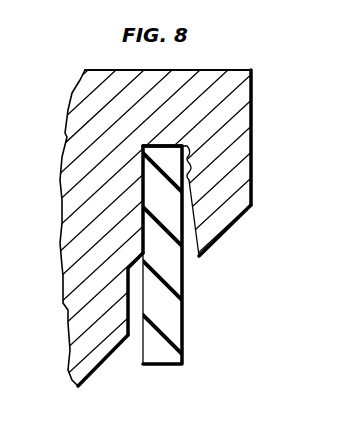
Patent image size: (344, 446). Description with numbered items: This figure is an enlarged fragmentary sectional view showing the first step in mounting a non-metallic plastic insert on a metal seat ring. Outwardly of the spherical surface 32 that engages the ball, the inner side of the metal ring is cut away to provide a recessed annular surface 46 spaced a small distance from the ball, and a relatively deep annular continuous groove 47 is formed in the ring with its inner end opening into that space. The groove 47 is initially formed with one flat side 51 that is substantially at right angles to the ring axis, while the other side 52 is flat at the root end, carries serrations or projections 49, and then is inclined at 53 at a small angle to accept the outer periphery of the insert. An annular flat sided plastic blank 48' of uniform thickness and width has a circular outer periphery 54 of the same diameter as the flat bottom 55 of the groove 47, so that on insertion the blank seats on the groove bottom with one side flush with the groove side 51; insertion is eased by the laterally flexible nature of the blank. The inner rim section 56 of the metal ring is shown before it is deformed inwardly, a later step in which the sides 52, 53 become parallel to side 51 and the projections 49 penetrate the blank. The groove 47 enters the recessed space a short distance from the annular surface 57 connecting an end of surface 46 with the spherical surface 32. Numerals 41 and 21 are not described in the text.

The housing body 41 is at (100, 75).
The upper surface 21 is at (221, 69).
The flat bottom of groove 55 is at (170, 146).
The circular outer periphery 54 is at (148, 148).
The other side of groove 52 is at (184, 144).
The serrations or projections 49 is at (190, 163).
The inner rim section 56 is at (247, 178).
The annular surface 46 is at (236, 228).
The inclined portion of groove side 53 is at (198, 232).
The annular flat sided plastic blank 48' is at (185, 254).
The annular continuous groove 47 is at (148, 241).
The flat side of groove 51 is at (65, 276).
The annular surface 57 is at (133, 312).
The spherical surface 32 is at (100, 365).